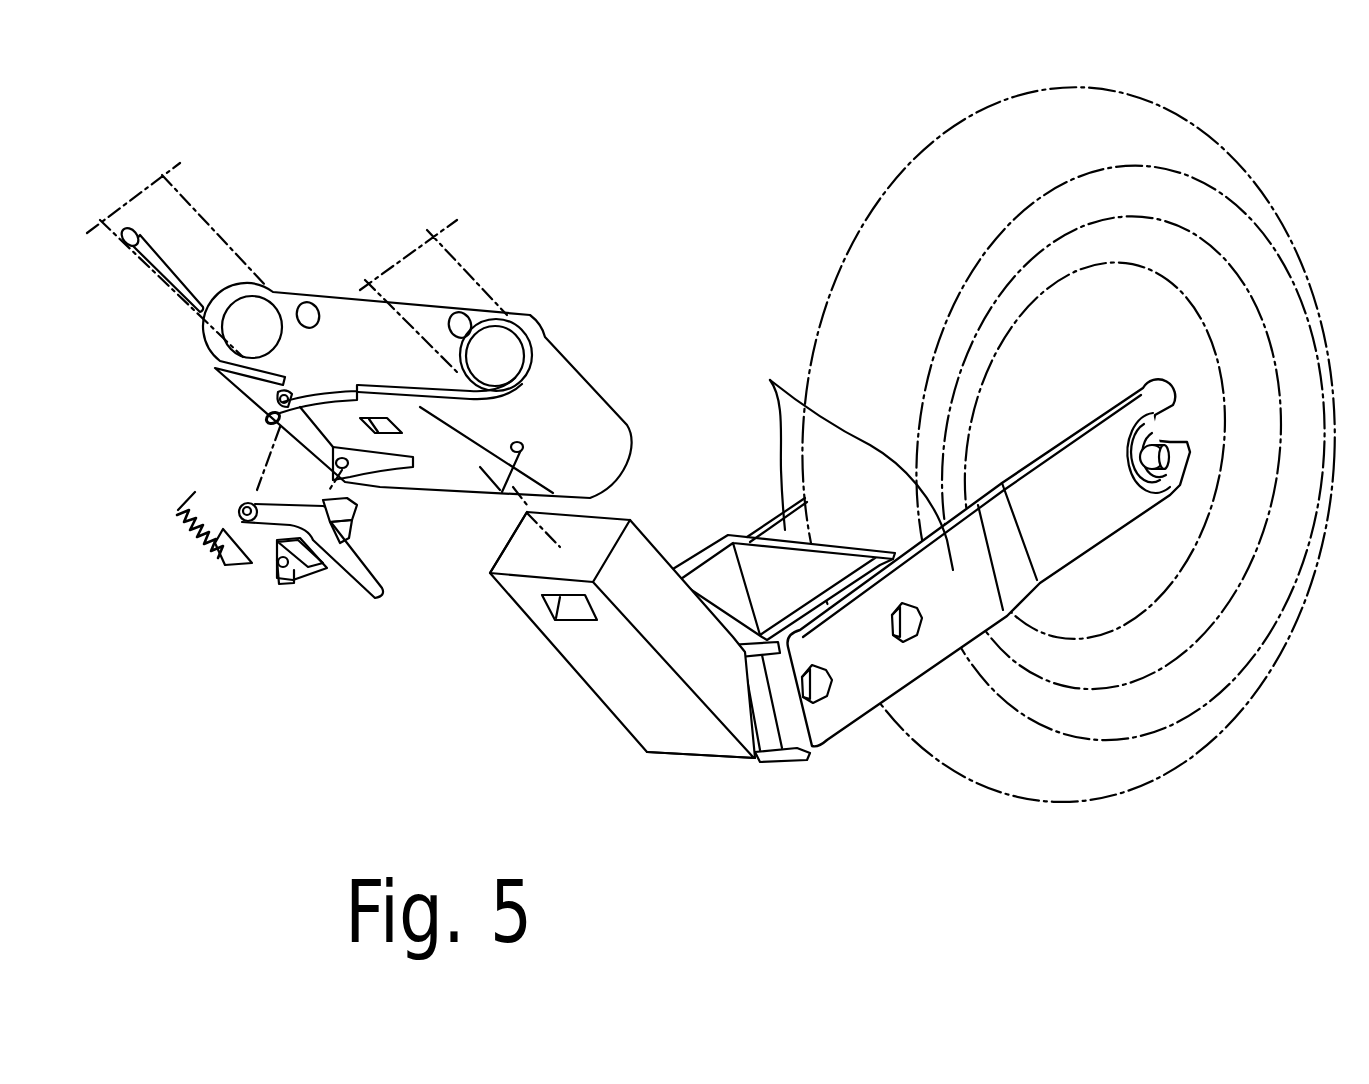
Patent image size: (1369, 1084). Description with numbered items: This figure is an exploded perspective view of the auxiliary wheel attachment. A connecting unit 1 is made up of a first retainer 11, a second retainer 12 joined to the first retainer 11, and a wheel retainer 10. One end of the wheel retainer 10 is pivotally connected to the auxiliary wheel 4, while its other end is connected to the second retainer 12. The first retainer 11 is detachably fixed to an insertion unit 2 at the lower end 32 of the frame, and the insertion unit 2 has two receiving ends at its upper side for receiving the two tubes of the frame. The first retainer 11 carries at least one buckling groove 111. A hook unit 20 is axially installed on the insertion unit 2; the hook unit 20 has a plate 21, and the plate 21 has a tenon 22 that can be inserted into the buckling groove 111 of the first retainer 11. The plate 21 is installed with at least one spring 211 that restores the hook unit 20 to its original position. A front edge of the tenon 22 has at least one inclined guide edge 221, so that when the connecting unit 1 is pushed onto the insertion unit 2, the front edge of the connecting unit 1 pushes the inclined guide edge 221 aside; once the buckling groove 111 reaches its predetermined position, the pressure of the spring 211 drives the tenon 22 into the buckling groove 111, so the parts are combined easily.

The connecting unit 1 is at (677, 507).
The wheel retainer 10 is at (851, 456).
The first retainer 11 is at (599, 630).
The buckling groove 111 is at (548, 608).
The second retainer 12 is at (753, 547).
The insertion unit 2 is at (345, 320).
The hook unit 20 is at (313, 610).
The plate 21 is at (330, 575).
The spring 211 is at (205, 560).
The tenon 22 is at (337, 510).
The inclined guide edge 221 is at (357, 547).
The lower end 32 is at (178, 204).
The auxiliary wheel 4 is at (872, 245).